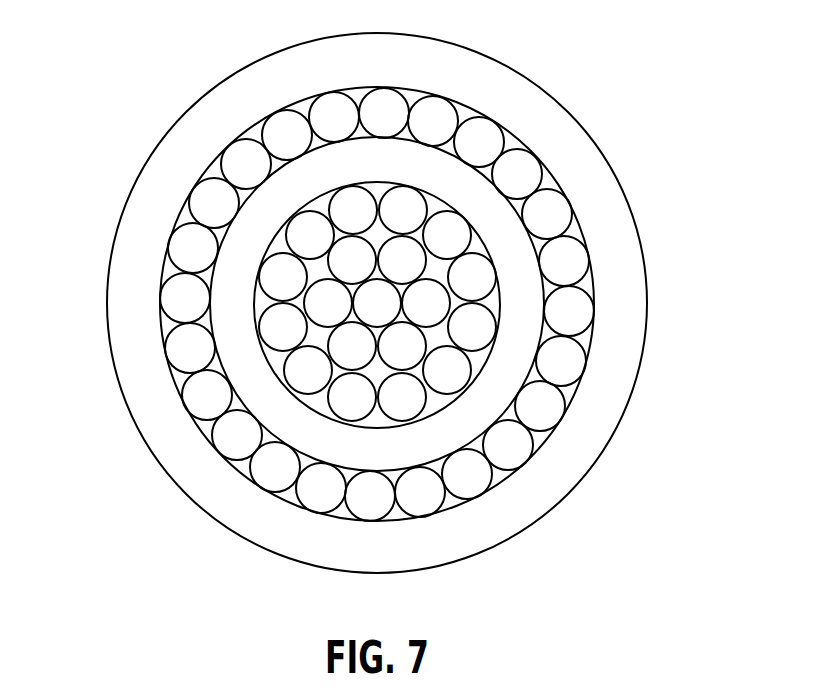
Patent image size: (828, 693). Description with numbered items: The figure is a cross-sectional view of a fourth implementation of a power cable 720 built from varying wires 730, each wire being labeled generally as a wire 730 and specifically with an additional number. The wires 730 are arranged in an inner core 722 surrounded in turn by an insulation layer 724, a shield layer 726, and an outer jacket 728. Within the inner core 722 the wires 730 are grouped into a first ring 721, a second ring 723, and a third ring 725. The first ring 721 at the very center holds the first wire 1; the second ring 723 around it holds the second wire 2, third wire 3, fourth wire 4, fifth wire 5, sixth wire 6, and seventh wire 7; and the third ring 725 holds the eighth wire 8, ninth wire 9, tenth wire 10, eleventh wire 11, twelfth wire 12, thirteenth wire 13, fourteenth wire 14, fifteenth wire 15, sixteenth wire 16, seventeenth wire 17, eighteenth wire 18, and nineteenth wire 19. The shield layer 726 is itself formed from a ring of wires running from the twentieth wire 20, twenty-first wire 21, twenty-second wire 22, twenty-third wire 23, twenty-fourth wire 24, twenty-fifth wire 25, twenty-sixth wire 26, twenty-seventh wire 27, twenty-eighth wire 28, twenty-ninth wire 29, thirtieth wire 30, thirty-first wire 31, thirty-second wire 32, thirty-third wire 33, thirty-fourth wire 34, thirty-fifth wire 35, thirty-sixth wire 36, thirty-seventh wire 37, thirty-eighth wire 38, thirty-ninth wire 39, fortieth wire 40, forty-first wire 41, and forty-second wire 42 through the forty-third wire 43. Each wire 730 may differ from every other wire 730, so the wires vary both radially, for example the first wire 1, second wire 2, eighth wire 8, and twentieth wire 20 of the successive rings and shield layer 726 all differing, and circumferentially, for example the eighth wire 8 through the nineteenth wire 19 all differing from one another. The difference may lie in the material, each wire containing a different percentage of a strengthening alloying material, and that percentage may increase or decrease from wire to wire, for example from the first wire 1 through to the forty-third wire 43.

The power cable 720 is at (118, 74).
The first ring 721 is at (432, 241).
The inner core 722 is at (495, 375).
The second ring 723 is at (457, 303).
The insulation layer 724 is at (513, 424).
The third ring 725 is at (500, 328).
The shield layer 726 is at (505, 496).
The jacket 728 is at (492, 558).
The wires 730 is at (336, 358).
The first wire 1 is at (377, 303).
The second wire 2 is at (402, 260).
The third wire 3 is at (426, 303).
The fourth wire 4 is at (402, 346).
The fifth wire 5 is at (352, 346).
The sixth wire 6 is at (328, 303).
The seventh wire 7 is at (352, 260).
The eighth wire 8 is at (353, 210).
The ninth wire 9 is at (403, 210).
The tenth wire 10 is at (447, 235).
The eleventh wire 11 is at (472, 277).
The twelfth wire 12 is at (472, 327).
The thirteenth wire 13 is at (447, 370).
The fourteenth wire 14 is at (402, 397).
The fifteenth wire 15 is at (352, 397).
The sixteenth wire 16 is at (308, 370).
The seventeenth wire 17 is at (283, 327).
The eighteenth wire 18 is at (283, 277).
The nineteenth wire 19 is at (310, 235).
The twentieth wire 20 is at (384, 113).
The twenty-first wire 21 is at (433, 121).
The twenty-second wire 22 is at (479, 142).
The twenty-third wire 23 is at (517, 174).
The twenty-fourth wire 24 is at (547, 214).
The twenty-fifth wire 25 is at (564, 261).
The twenty-sixth wire 26 is at (569, 311).
The twenty-seventh wire 27 is at (561, 361).
The twenty-eighth wire 28 is at (540, 406).
The twenty-ninth wire 29 is at (508, 445).
The thirtieth wire 30 is at (467, 474).
The thirty-first wire 31 is at (420, 492).
The thirty-second wire 32 is at (370, 496).
The thirty-third wire 33 is at (321, 488).
The thirty-fourth wire 34 is at (275, 467).
The thirty-fifth wire 35 is at (237, 435).
The thirty-sixth wire 36 is at (207, 395).
The thirty-seventh wire 37 is at (190, 348).
The thirty-eighth wire 38 is at (185, 298).
The thirty-ninth wire 39 is at (193, 248).
The fortieth wire 40 is at (214, 203).
The forty-first wire 41 is at (246, 164).
The forty-second wire 42 is at (287, 135).
The forty-third wire 43 is at (334, 117).